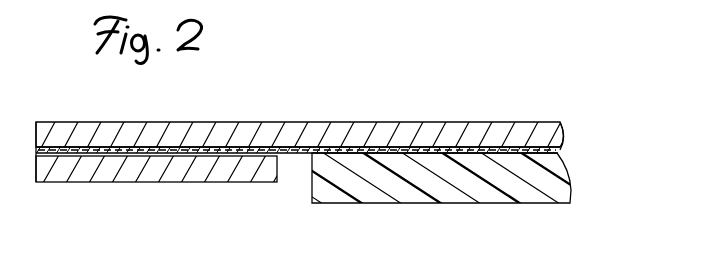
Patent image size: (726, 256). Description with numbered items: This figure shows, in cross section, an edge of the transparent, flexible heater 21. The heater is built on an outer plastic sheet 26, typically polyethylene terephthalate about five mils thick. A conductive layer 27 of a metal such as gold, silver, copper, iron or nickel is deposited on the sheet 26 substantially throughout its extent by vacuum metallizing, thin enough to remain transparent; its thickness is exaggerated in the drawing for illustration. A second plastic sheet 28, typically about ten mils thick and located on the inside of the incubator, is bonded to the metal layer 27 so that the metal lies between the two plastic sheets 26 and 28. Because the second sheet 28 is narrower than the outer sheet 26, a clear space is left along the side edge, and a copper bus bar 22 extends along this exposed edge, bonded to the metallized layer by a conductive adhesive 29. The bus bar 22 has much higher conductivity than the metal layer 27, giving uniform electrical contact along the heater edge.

The transparent flexible heater 21 is at (293, 118).
The copper bus bar 22 is at (255, 184).
The outer plastic sheet 26 is at (434, 121).
The conductive layer 27 is at (563, 150).
The second plastic sheet 28 is at (573, 185).
The conductive adhesive 29 is at (33, 150).